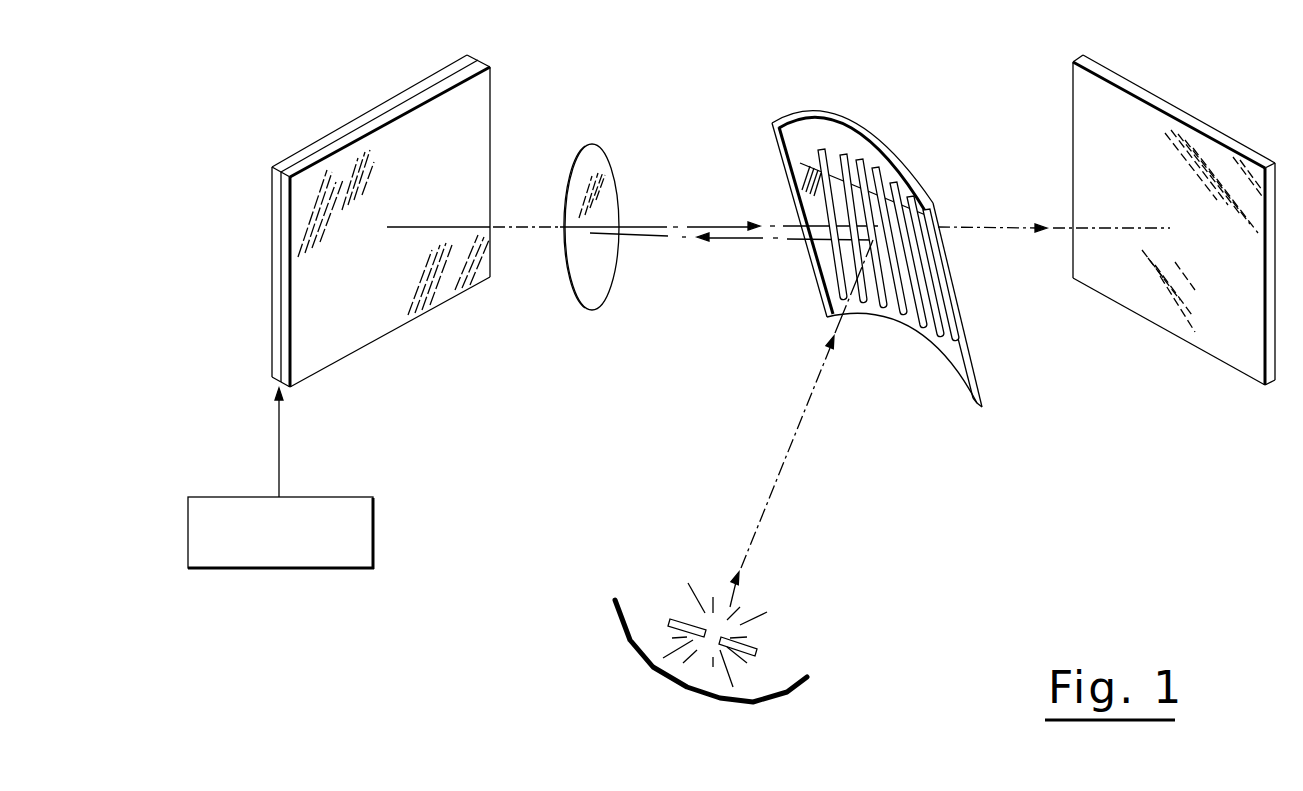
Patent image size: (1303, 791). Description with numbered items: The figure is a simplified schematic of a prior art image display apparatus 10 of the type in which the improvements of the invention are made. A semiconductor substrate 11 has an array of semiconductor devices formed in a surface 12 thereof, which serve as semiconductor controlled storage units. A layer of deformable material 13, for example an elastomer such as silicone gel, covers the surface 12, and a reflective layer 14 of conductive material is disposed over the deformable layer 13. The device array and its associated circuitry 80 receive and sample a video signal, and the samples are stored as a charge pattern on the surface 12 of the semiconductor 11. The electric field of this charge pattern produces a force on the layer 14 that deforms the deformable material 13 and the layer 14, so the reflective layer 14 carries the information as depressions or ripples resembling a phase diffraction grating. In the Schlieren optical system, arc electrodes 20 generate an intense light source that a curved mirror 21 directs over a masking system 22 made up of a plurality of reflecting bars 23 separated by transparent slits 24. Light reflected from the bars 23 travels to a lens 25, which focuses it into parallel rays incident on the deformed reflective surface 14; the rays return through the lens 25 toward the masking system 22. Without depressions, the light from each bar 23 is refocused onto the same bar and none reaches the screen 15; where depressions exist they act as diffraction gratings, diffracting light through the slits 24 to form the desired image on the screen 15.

The apparatus 10 is at (856, 325).
The semiconductor substrate 11 is at (374, 218).
The surface 12 is at (417, 92).
The layer of deformable material 13 is at (456, 70).
The reflective layer 14 is at (481, 96).
The screen 15 is at (1082, 97).
The arc electrodes 20 is at (670, 616).
The curved mirror 21 is at (612, 619).
The masking system 22 is at (790, 126).
The reflecting bars 23 is at (873, 240).
The slits 24 is at (883, 197).
The lens 25 is at (600, 160).
The circuitry 80 is at (375, 498).